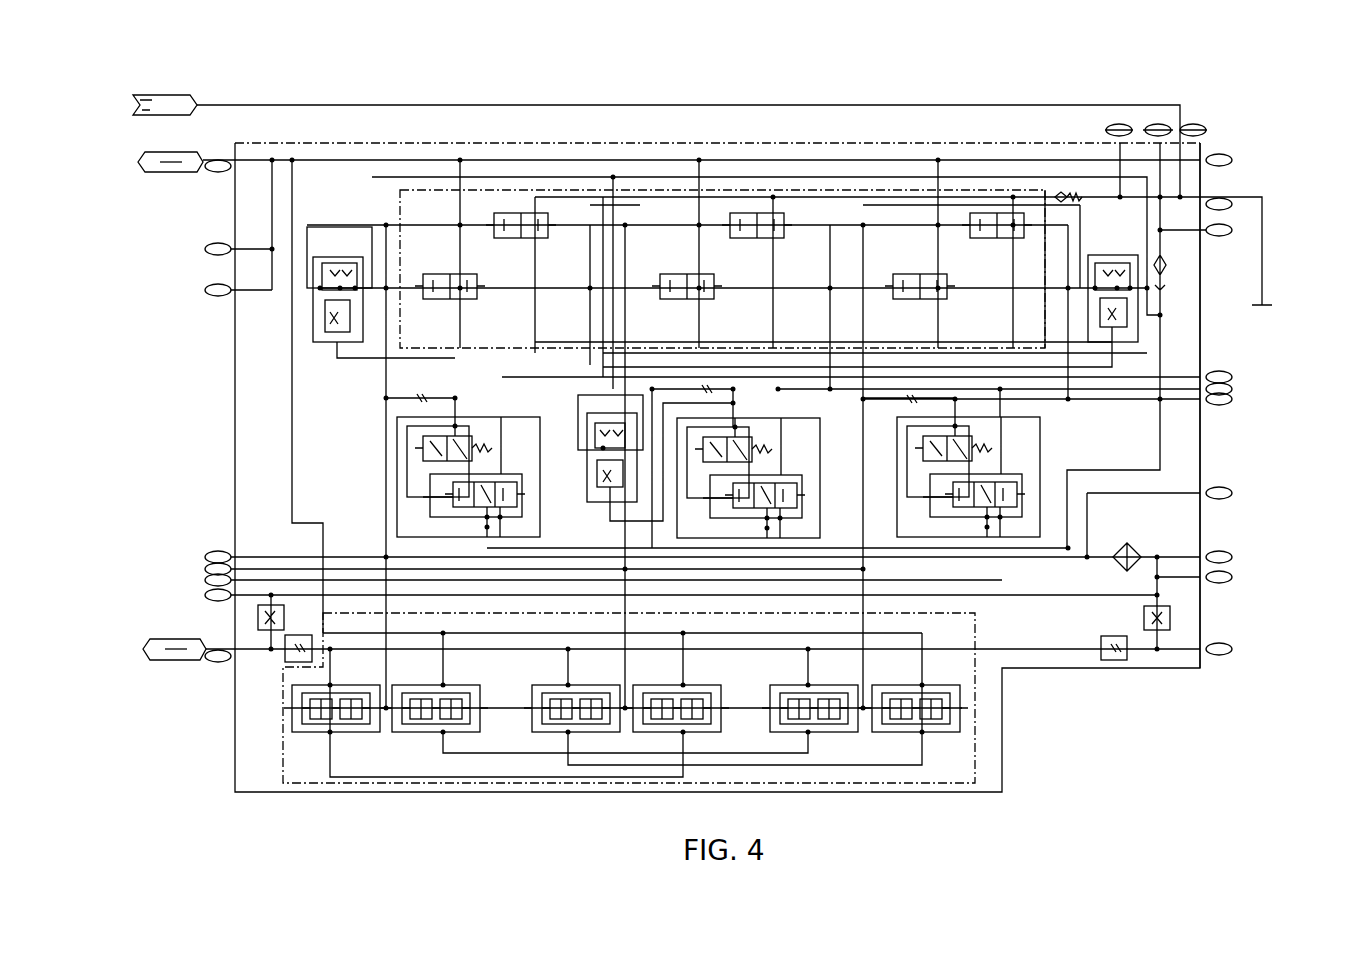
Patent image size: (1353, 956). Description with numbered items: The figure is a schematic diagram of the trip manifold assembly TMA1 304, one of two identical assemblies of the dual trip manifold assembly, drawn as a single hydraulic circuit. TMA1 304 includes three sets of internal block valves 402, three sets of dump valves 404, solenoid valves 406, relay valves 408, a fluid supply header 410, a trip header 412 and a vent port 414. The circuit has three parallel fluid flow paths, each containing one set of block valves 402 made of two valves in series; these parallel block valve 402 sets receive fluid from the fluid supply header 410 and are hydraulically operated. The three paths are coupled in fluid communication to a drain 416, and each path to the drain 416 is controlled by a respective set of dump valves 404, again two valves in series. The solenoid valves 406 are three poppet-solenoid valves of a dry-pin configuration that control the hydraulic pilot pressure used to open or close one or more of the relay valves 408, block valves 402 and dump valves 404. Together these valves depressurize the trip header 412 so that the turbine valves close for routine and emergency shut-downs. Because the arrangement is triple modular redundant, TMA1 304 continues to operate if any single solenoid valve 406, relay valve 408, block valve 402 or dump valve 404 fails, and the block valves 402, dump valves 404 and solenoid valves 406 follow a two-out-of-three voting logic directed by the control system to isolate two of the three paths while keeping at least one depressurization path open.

The TMA1 304 is at (910, 74).
The internal block valves 402 is at (1002, 748).
The dump valves 404 is at (510, 190).
The solenoid valves 406 is at (395, 462).
The relay valves 408 is at (313, 318).
The fluid supply header 410 is at (175, 660).
The trip header 412 is at (175, 172).
The vent port 414 is at (167, 95).
The drain 416 is at (1240, 197).